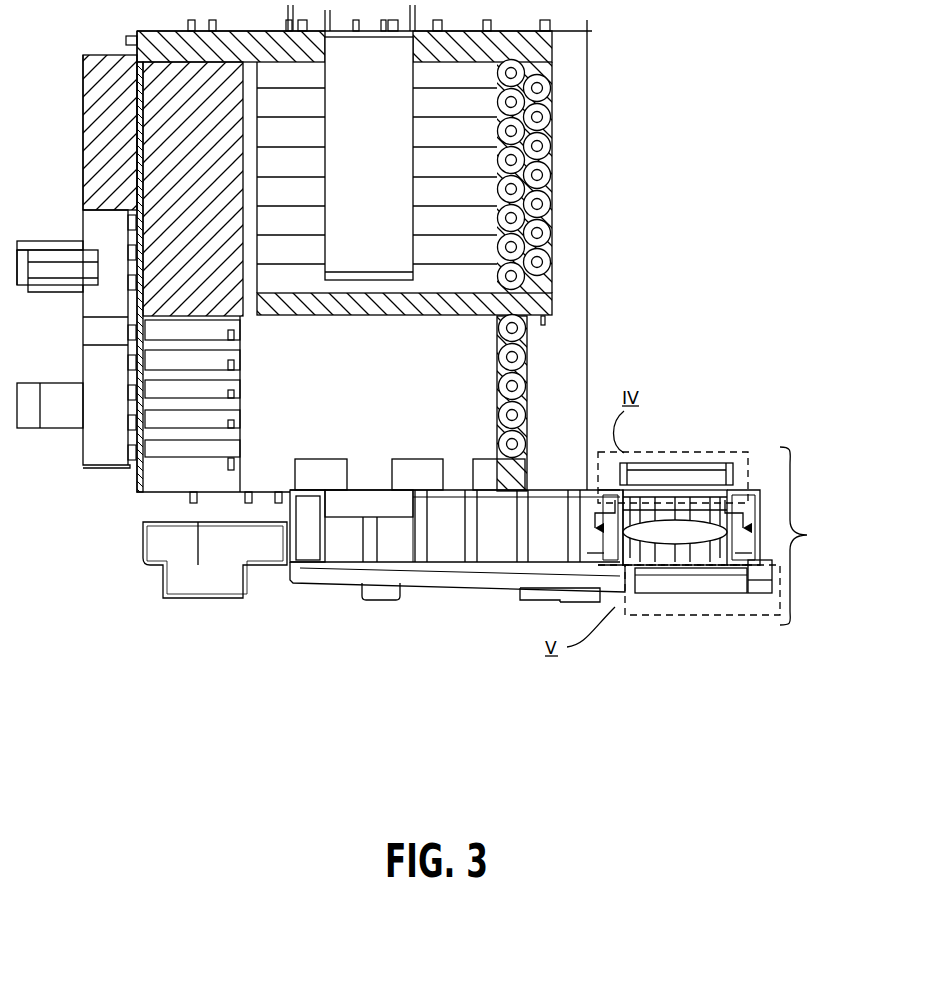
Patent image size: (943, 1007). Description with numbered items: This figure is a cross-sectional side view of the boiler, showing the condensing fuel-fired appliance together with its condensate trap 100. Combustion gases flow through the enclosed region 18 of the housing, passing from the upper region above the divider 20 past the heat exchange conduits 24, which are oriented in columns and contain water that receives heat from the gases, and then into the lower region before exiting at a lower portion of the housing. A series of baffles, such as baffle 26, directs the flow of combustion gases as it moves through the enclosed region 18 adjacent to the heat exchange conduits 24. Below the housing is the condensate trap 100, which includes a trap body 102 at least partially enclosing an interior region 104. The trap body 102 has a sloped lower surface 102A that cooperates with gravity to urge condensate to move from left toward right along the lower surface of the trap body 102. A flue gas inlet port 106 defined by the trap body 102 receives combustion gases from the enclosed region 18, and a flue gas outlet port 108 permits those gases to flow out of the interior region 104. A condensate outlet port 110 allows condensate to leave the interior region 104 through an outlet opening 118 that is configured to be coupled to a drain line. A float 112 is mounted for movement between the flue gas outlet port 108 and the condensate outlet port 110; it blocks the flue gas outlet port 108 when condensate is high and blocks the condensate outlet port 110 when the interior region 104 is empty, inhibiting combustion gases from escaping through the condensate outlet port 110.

The enclosed region 18 is at (560, 367).
The divider 20 is at (545, 296).
The heat exchange conduits 24 is at (552, 111).
The baffle 26 is at (498, 373).
The condensate trap 100 is at (718, 536).
The trap body 102 is at (297, 583).
The sloped lower surface 102A is at (428, 570).
The interior region 104 is at (490, 572).
The flue gas inlet port 106 is at (368, 505).
The flue gas outlet port 108 is at (678, 470).
The condensate outlet port 110 is at (660, 583).
The float 112 is at (697, 547).
The outlet opening 118 is at (760, 585).